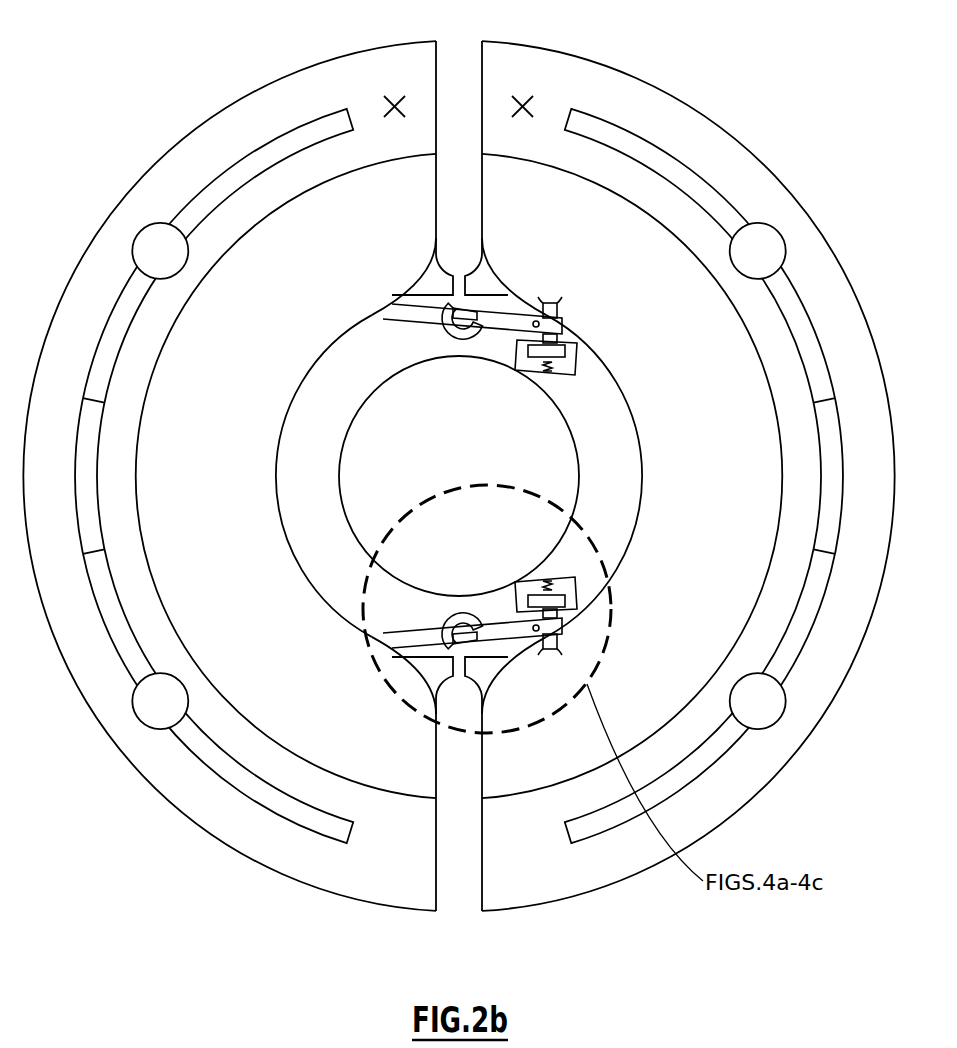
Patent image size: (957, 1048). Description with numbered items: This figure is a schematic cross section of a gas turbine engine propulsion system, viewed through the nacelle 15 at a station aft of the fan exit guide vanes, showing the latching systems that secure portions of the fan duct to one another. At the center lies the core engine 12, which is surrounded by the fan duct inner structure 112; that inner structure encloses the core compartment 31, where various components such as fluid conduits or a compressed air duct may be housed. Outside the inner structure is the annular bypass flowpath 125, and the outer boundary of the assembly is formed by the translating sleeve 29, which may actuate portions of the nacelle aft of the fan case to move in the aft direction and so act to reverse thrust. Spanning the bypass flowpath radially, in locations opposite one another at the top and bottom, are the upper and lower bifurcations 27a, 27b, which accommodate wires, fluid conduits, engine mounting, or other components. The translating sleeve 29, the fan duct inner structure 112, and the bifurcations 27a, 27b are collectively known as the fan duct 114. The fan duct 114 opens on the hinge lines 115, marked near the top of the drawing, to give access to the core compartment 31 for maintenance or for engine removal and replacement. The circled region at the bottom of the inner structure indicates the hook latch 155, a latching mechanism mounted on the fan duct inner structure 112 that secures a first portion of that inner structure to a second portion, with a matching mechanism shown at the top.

The core engine 12 is at (473, 481).
The nacelle 15 is at (838, 336).
The upper bifurcation 27a is at (435, 202).
The lower bifurcation 27b is at (436, 760).
The translating sleeve 29 is at (825, 238).
The core compartment 31 is at (604, 428).
The fan duct inner structure 112 is at (289, 545).
The fan duct 114 is at (772, 123).
The hinge lines 115 is at (394, 100).
The bypass flowpath 125 is at (247, 409).
The hook latch 155 is at (528, 672).